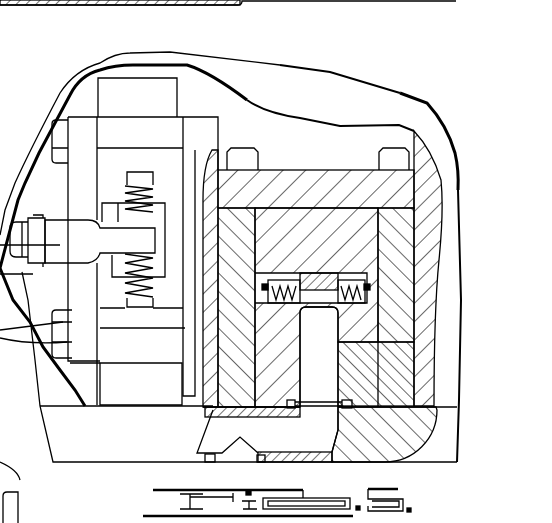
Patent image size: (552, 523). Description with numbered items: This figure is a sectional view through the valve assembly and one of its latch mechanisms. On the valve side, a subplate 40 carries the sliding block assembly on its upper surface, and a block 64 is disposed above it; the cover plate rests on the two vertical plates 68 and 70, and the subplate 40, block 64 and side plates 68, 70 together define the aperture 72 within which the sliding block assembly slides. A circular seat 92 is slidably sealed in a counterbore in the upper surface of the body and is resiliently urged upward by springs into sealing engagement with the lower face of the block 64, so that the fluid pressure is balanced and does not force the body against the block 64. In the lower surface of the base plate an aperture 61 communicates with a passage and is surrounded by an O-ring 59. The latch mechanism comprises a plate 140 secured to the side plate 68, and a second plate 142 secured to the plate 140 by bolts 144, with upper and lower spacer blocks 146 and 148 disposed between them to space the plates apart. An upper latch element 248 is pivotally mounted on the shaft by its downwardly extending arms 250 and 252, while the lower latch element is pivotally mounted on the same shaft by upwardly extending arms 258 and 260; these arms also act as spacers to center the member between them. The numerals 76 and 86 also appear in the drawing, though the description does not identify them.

The plate 140 is at (212, 127).
The second plate 142 is at (80, 167).
The bolts 144 is at (63, 154).
The upper spacer block 146 is at (145, 128).
The lower spacer block 148 is at (126, 355).
The upper latch element 248 is at (157, 192).
The downwardly extending arm 250 is at (205, 228).
The downwardly extending arm 252 is at (102, 226).
The upwardly extending arm 258 is at (188, 247).
The upwardly extending arm 260 is at (118, 258).
The block 64 is at (338, 217).
The vertical plate 68 is at (242, 230).
The vertical plate 70 is at (386, 241).
The aperture 72 is at (378, 309).
The circular seat 92 is at (316, 297).
The bore 76 is at (300, 323).
The subplate 40 is at (256, 423).
The O-ring 59 is at (264, 462).
The aperture 61 is at (247, 462).
The member 86 is at (12, 478).